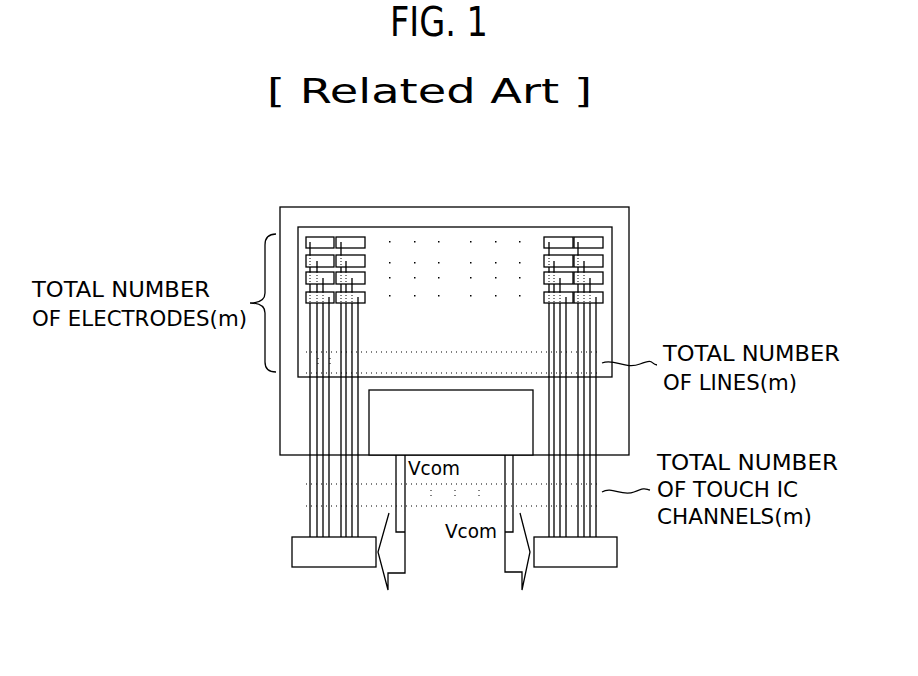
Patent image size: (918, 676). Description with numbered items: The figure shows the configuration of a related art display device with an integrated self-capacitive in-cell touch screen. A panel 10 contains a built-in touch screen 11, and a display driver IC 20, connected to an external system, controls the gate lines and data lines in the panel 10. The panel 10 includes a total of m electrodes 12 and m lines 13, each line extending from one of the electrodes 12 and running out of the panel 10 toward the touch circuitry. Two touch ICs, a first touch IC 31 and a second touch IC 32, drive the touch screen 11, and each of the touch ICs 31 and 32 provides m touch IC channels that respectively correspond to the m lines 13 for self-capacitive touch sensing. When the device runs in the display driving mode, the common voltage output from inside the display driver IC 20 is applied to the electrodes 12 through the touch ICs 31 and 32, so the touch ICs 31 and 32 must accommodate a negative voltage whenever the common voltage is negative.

The panel 10 is at (629, 215).
The touch screen 11 is at (612, 250).
The electrodes 12 is at (597, 263).
The lines 13 is at (595, 320).
The display driver IC (DD-IC) 20 is at (533, 422).
The first touch IC (T-IC1) 31 is at (292, 555).
The second touch IC (T-IC2) 32 is at (617, 555).